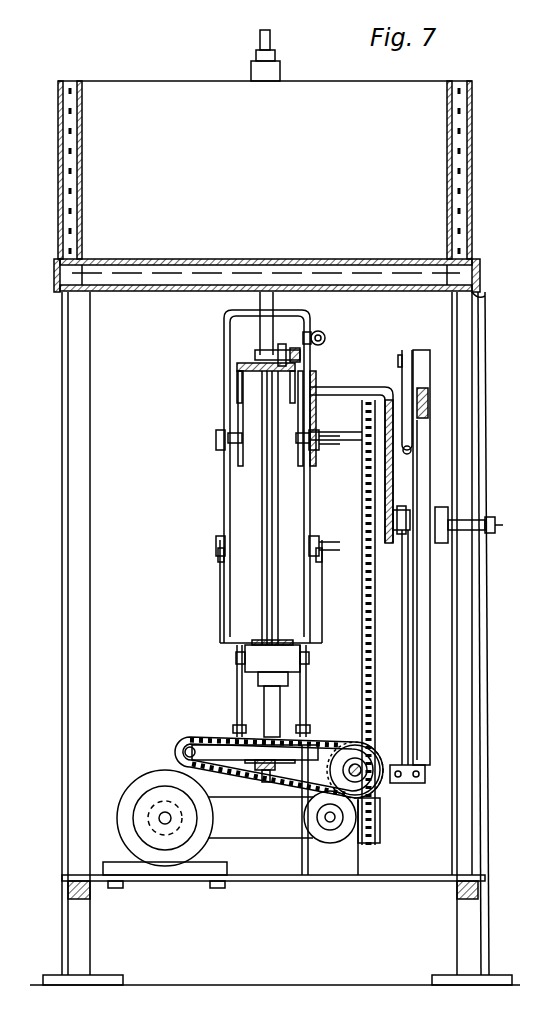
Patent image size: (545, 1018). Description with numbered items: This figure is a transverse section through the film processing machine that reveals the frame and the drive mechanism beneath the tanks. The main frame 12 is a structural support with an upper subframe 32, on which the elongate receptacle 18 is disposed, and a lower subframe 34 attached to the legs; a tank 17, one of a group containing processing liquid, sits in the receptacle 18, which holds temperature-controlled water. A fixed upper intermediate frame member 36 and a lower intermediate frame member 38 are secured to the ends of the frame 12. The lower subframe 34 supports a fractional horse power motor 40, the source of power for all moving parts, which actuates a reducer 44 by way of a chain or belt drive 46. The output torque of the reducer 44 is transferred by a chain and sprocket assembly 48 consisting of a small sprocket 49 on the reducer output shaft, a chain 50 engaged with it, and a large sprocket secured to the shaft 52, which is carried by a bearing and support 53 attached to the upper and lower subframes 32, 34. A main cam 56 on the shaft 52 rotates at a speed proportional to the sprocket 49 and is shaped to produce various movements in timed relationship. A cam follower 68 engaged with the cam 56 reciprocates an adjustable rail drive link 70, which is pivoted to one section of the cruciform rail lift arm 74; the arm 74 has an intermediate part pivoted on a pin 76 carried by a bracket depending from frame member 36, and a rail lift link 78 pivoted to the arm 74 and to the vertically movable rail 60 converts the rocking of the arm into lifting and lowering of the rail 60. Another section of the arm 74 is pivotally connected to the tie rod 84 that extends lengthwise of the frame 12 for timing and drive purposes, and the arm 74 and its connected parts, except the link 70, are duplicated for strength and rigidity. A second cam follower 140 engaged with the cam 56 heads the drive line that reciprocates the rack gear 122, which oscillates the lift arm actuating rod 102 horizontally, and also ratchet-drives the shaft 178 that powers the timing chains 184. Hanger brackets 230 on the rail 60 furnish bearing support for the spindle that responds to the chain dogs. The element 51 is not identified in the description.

The tank 17 is at (290, 161).
The elongate receptacle 18 is at (473, 141).
The upper subframe 32 is at (480, 294).
The main frame 12 is at (280, 638).
The bearing and support 53 is at (486, 703).
The lower subframe 34 is at (250, 877).
The upper intermediate frame member 36 is at (240, 368).
The rail lift link 78 is at (222, 619).
The lift arm actuating rod 102 is at (262, 525).
The rack gear 122 is at (300, 357).
The tie rod 84 is at (323, 333).
The rail lift arm 74 is at (218, 437).
The pin 76 is at (220, 452).
The vertically movable rail 60 is at (300, 680).
The hanger bracket 230 is at (237, 686).
The chain and sprocket assembly 48 is at (245, 752).
The timing chain 184 is at (200, 738).
The lower intermediate frame member 38 is at (262, 773).
The shaft 178 is at (362, 776).
The fractional horse power motor 40 is at (167, 862).
The chain or belt drive 46 is at (262, 838).
The reducer 44 is at (340, 857).
The chain 50 is at (363, 718).
The small sprocket 49 is at (377, 838).
The rod 51 is at (370, 600).
The adjustable rail drive link 70 is at (386, 480).
The cam follower 140 is at (407, 348).
The main cam 56 is at (431, 585).
The cam follower 68 is at (398, 531).
The shaft 52 is at (494, 521).